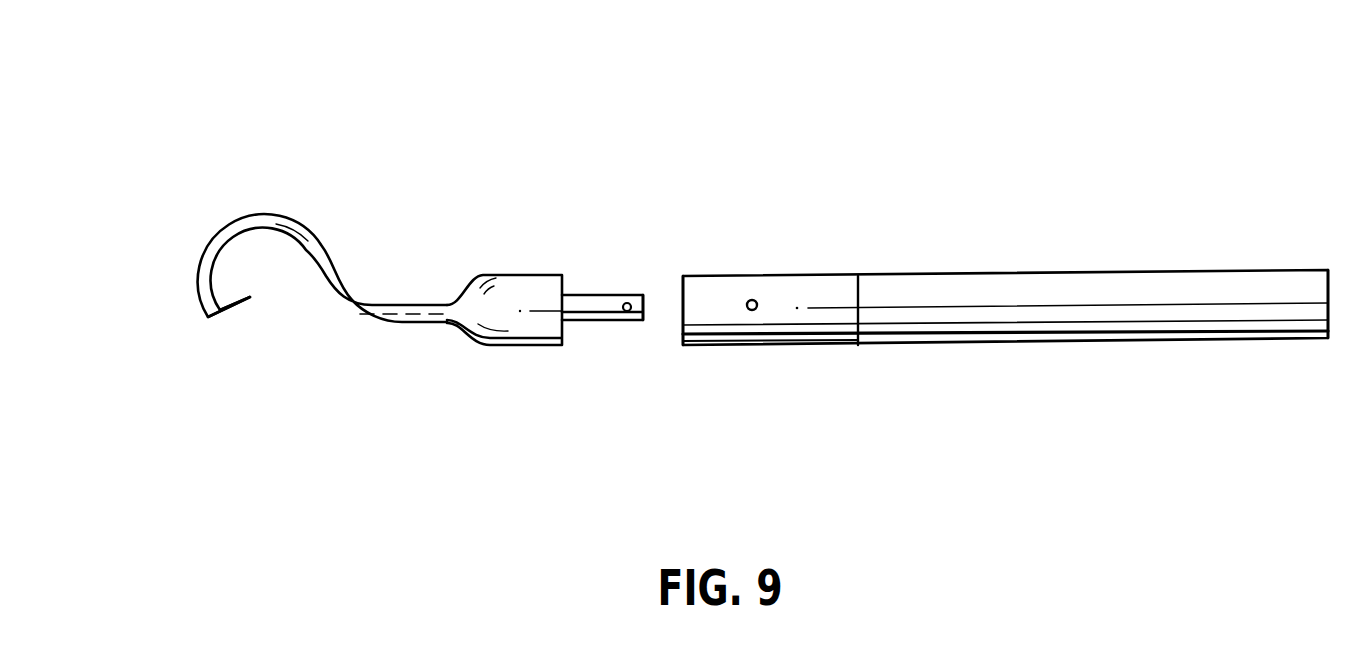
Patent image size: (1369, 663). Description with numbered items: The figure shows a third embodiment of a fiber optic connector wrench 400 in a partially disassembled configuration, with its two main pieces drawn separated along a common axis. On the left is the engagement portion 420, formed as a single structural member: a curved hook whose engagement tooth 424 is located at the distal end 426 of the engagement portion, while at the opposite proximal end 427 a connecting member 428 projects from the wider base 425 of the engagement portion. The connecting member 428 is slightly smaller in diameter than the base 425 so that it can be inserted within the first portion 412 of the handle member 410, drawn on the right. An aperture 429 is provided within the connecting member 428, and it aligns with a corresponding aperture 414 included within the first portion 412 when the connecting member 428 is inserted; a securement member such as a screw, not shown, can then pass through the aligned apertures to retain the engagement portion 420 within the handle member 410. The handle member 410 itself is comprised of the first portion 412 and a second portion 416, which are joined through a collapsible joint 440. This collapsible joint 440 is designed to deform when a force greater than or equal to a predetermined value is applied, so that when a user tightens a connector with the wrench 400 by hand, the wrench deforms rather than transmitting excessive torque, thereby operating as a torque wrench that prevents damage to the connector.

The fiber optic connector wrench 400 is at (740, 132).
The handle member 410 is at (1040, 240).
The first portion 412 is at (793, 277).
The aperture 414 is at (752, 310).
The second portion 416 is at (1200, 270).
The engagement portion 420 is at (272, 217).
The engagement tooth 424 is at (252, 303).
The base 425 is at (502, 345).
The distal end 426 is at (186, 258).
The proximal end 427 is at (660, 262).
The connecting member 428 is at (610, 295).
The aperture 429 is at (627, 313).
The collapsible joint 440 is at (857, 355).